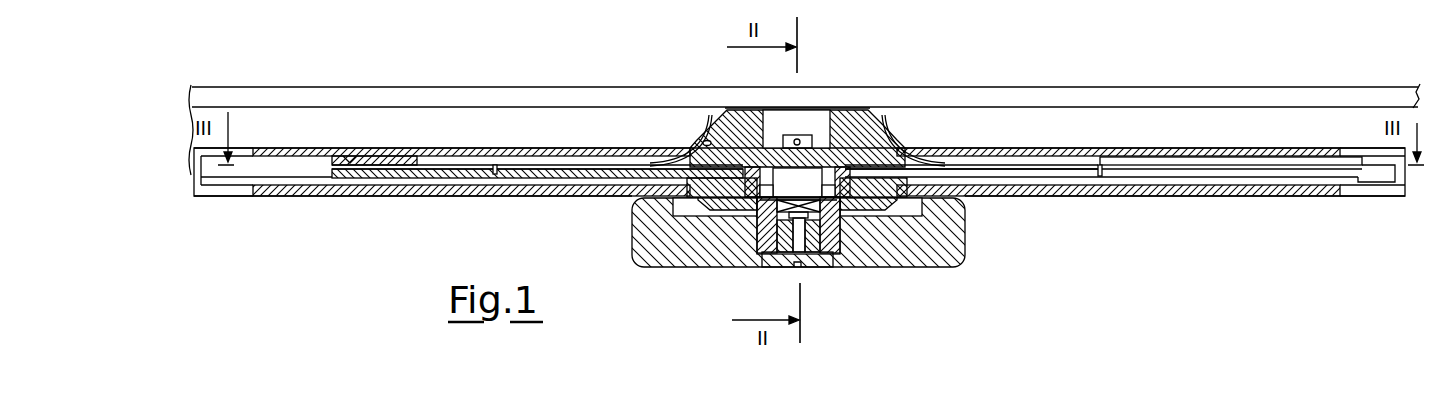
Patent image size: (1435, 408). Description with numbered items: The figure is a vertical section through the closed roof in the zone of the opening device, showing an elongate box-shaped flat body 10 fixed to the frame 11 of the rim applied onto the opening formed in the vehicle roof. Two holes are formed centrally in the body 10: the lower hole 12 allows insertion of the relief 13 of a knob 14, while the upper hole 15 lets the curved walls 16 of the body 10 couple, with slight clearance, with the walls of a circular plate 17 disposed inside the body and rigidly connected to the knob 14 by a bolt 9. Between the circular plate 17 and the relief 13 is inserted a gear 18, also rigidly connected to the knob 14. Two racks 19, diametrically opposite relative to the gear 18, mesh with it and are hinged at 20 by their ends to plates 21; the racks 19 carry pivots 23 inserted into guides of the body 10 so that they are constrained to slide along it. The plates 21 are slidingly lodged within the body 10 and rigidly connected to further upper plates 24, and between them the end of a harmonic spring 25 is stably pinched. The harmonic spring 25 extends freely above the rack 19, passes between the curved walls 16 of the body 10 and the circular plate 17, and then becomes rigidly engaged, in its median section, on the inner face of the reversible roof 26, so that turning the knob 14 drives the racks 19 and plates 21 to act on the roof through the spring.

The bolt 9 is at (801, 145).
The body 10 is at (326, 196).
The frame 11 is at (1417, 178).
The lower hole 12 is at (838, 238).
The relief 13 is at (770, 205).
The knob 14 is at (666, 238).
The upper hole 15 is at (709, 138).
The curved walls 16 is at (692, 133).
The circular plate 17 is at (895, 108).
The gear 18 is at (797, 178).
The racks 19 is at (582, 186).
The hinge 20 is at (495, 166).
The plates 21 is at (438, 179).
The pivots 23 is at (752, 185).
The upper plates 24 is at (402, 158).
The harmonic spring 25 is at (586, 167).
The reversible roof 26 is at (415, 93).